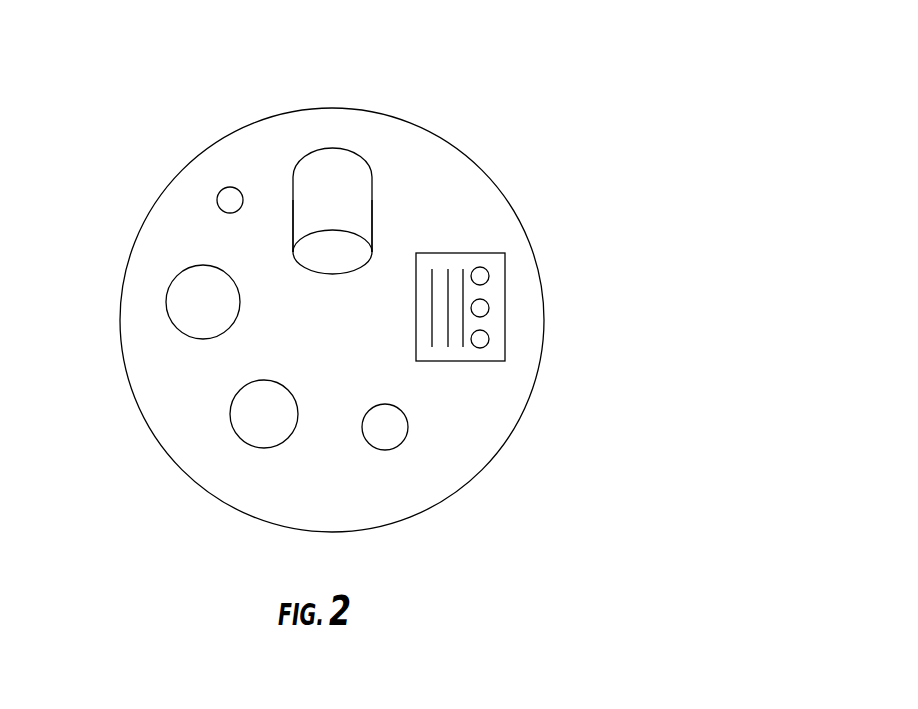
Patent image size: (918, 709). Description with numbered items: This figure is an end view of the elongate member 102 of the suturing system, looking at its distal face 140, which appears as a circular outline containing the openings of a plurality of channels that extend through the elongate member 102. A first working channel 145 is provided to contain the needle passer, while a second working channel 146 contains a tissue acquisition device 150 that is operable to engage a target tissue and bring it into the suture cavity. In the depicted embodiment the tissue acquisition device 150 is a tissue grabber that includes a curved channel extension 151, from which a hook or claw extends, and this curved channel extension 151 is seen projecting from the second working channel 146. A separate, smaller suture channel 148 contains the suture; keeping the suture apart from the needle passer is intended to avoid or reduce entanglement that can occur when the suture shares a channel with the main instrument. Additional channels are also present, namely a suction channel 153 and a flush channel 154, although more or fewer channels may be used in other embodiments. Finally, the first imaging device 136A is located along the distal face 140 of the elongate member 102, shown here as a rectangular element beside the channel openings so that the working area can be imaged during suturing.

The elongate member 102 is at (287, 68).
The distal face 140 is at (475, 450).
The suture channel 148 is at (226, 199).
The tissue acquisition device 150 is at (280, 189).
The second working channel 146 is at (345, 147).
The curved channel extension 151 is at (363, 198).
The first imaging device 136A is at (480, 352).
The first working channel 145 is at (180, 308).
The suction channel 153 is at (263, 435).
The flush channel 154 is at (385, 437).